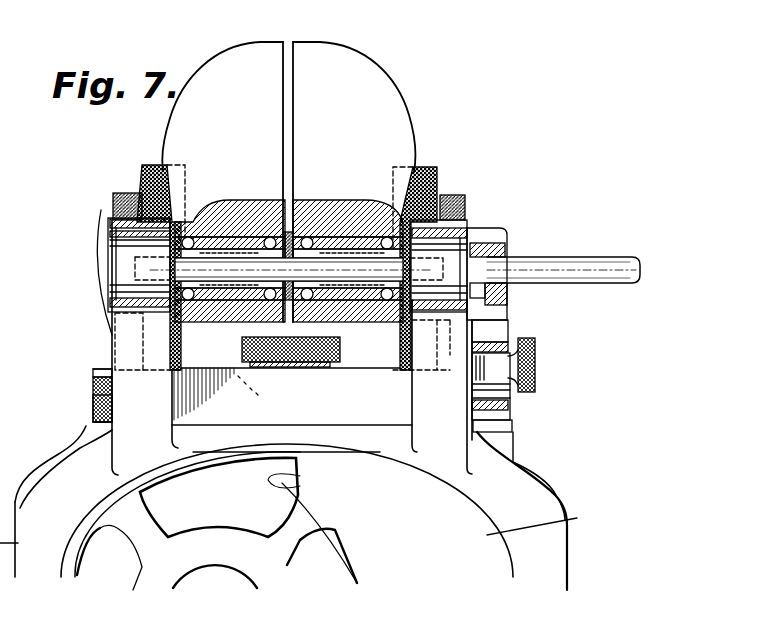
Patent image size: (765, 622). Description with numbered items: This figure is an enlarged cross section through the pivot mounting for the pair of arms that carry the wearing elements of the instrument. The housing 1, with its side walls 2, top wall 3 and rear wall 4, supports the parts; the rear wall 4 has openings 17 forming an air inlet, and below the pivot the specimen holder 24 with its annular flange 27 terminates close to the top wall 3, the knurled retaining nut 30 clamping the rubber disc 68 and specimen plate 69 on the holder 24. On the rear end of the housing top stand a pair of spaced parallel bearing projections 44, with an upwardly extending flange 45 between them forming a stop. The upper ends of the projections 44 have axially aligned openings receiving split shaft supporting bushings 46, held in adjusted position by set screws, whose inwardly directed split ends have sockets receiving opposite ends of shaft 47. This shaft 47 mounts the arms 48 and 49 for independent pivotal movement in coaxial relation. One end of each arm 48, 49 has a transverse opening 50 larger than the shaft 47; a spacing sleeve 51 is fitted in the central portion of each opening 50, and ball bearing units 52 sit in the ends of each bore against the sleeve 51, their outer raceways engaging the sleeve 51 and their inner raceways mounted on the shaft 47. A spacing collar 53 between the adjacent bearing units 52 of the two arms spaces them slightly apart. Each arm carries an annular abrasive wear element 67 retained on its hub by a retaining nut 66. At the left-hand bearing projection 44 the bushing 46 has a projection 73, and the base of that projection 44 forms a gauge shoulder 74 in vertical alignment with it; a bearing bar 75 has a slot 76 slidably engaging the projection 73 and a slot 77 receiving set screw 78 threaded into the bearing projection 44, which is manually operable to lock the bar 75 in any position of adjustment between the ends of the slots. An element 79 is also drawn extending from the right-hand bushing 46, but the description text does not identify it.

The housing 1 is at (579, 552).
The side walls 2 is at (573, 555).
The top wall 3 is at (90, 424).
The rear wall 4 is at (538, 525).
The openings 17 is at (282, 481).
The specimen holder 24 is at (90, 399).
The annular flange 27 is at (93, 414).
The knurled retaining nut 30 is at (338, 354).
The bearing projections 44 is at (122, 350).
The flange 45 is at (357, 400).
The split shaft supporting bushings 46 is at (125, 247).
The shaft 47 is at (237, 268).
The arm 48 is at (313, 58).
The arm 49 is at (250, 56).
The openings 50 is at (242, 238).
The spacing sleeve 51 is at (228, 247).
The ball bearing units 52 is at (330, 247).
The spacing collar 53 is at (287, 232).
The retaining nut 66 is at (108, 233).
The abrasive disc 67 is at (153, 168).
The rubber disc 68 is at (100, 375).
The specimen plate 69 is at (108, 372).
The projection 73 is at (490, 293).
The gauge shoulder 74 is at (505, 434).
The bearing bar 75 is at (490, 336).
The slot 76 is at (492, 306).
The slot 77 is at (510, 386).
The set screw 78 is at (535, 366).
The shaft 79 is at (540, 268).